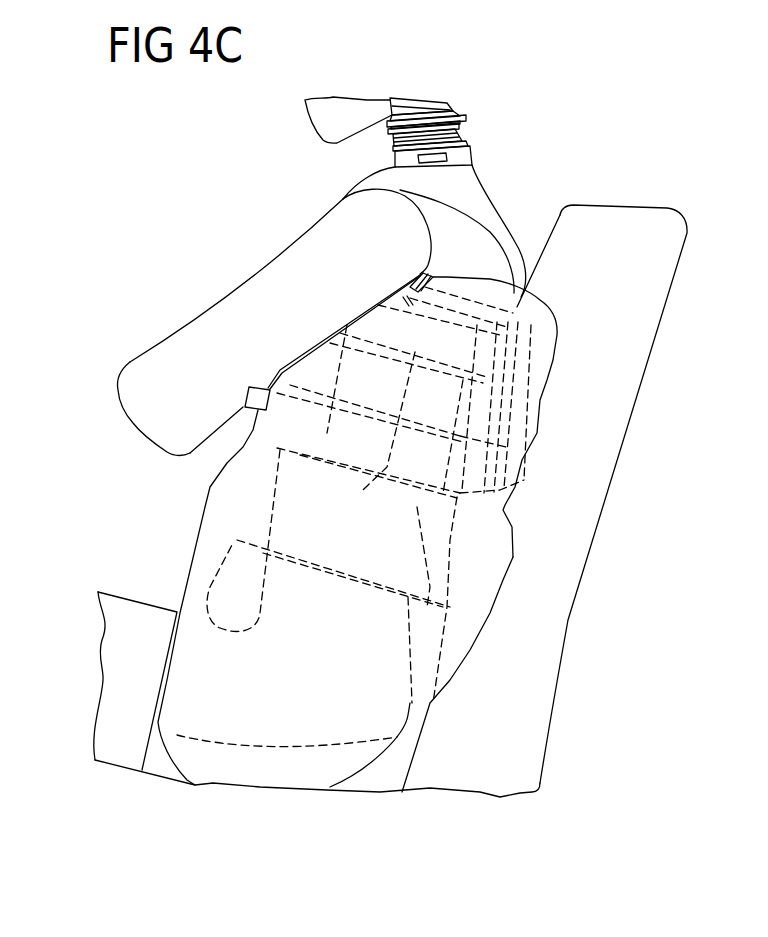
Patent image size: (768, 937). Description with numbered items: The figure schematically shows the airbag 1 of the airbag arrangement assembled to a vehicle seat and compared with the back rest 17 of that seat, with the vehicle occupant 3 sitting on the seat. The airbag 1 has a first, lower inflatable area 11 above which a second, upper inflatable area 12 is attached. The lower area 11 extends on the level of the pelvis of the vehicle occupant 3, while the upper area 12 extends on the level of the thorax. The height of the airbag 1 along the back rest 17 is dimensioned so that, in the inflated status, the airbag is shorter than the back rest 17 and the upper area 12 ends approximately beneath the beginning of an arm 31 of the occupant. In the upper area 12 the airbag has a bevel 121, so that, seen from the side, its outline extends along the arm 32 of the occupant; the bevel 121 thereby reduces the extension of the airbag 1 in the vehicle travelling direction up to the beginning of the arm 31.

The airbag 1 is at (366, 495).
The first inflatable area 11 is at (453, 653).
The second inflatable area 12 is at (523, 408).
The bevel 121 is at (343, 328).
The back rest 17 is at (665, 265).
The vehicle occupant 3 is at (338, 276).
The beginning of an arm 31 is at (433, 235).
The arm 32 is at (198, 342).